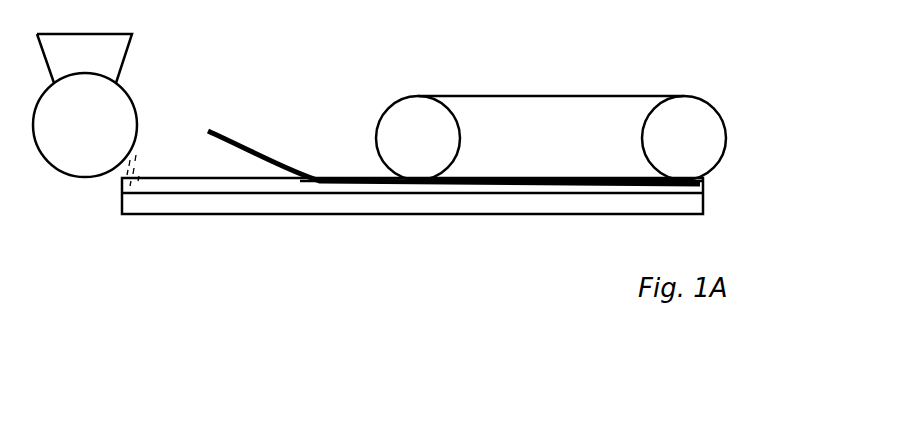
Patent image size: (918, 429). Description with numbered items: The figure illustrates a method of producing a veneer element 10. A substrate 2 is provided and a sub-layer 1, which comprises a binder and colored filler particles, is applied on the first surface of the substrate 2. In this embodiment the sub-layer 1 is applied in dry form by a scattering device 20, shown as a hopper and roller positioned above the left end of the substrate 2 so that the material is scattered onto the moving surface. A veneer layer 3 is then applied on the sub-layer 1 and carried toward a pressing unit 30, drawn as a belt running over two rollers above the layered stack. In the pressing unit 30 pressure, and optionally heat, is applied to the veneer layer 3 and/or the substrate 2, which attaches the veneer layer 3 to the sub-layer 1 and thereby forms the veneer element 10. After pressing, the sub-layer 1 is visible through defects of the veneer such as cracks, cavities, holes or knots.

The sub-layer 1 is at (258, 183).
The substrate 2 is at (213, 205).
The veneer layer 3 is at (253, 151).
The veneer element 10 is at (736, 209).
The scattering device 20 is at (133, 100).
The pressing unit 30 is at (530, 88).